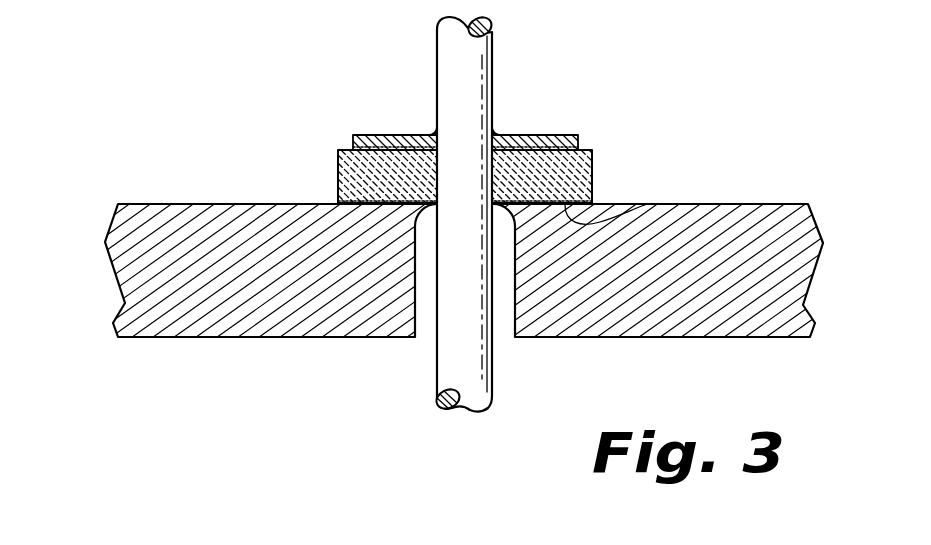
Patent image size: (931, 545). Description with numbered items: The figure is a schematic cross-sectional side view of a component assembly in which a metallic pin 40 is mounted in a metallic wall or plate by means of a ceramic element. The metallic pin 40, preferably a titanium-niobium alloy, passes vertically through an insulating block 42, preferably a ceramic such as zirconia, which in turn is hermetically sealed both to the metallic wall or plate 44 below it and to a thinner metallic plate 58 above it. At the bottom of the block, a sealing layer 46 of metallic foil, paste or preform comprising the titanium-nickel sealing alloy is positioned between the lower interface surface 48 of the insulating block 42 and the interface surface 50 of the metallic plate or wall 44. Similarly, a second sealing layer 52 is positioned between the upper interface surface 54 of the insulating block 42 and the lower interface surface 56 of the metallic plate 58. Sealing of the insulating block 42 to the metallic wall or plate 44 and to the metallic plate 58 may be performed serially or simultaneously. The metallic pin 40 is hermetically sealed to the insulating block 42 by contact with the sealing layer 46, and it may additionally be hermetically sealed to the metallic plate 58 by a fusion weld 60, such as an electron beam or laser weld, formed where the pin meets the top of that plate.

The metallic pin 40 is at (437, 69).
The insulating block 42 is at (570, 177).
The metallic wall or plate 44 is at (676, 279).
The sealing layer 46 is at (590, 203).
The lower interface surface 48 is at (645, 205).
The interface surface 50 is at (334, 216).
The sealing layer 52 is at (352, 148).
The upper interface surface 54 is at (522, 148).
The lower interface surface 56 is at (550, 148).
The metallic plate 58 is at (368, 135).
The fusion weld 60 is at (434, 132).